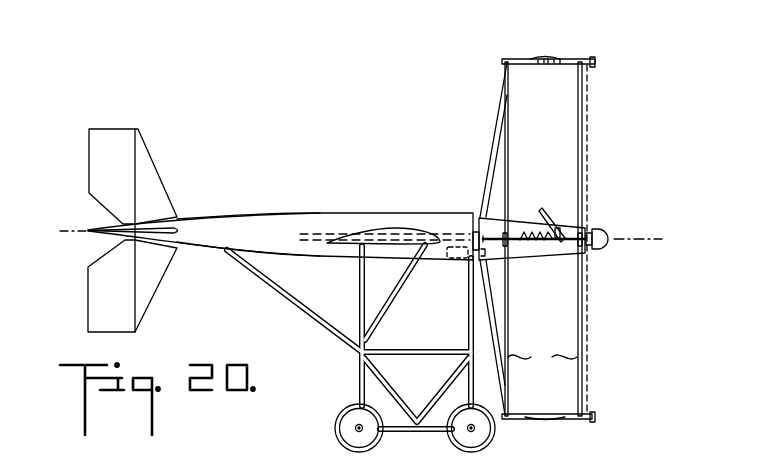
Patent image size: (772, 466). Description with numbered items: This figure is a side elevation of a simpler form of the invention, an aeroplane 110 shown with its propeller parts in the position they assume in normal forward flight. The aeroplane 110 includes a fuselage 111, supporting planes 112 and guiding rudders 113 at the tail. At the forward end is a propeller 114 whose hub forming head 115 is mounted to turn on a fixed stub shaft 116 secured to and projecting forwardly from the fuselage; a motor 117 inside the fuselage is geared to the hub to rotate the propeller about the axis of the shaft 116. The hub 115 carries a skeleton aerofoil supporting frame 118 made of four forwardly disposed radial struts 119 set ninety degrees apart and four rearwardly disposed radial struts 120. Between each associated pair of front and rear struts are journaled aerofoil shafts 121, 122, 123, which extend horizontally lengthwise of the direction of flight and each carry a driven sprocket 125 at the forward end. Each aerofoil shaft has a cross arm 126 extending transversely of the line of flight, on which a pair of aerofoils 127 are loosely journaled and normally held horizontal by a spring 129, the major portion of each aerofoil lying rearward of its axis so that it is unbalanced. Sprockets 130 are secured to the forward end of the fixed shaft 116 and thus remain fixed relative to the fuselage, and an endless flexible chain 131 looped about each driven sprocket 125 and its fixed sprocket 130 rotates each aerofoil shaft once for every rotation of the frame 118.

The aeroplane 110 is at (405, 213).
The fuselage 111 is at (270, 238).
The supporting planes 112 is at (383, 236).
The guiding rudders 113 is at (167, 230).
The propeller 114 is at (530, 158).
The hub forming head 115 is at (521, 252).
The fixed stub shaft 116 is at (446, 234).
The motor 117 is at (450, 262).
The aerofoil supporting frame 118 is at (542, 357).
The forwardly disposed radial struts 119 is at (583, 148).
The rearwardly disposed radial struts 120 is at (503, 133).
The aerofoil shaft 121 is at (517, 59).
The aerofoil shaft 122 is at (569, 242).
The aerofoil shaft 123 is at (508, 419).
The driven sprocket 125 is at (591, 57).
The cross arm 126 is at (558, 59).
The aerofoil 127 is at (536, 59).
The spring 129 is at (545, 213).
The sprocket 130 is at (594, 250).
The endless flexible chain 131 is at (590, 108).